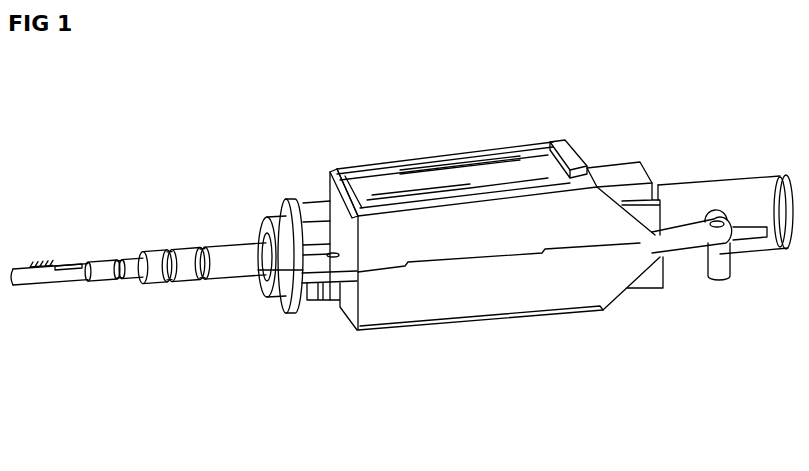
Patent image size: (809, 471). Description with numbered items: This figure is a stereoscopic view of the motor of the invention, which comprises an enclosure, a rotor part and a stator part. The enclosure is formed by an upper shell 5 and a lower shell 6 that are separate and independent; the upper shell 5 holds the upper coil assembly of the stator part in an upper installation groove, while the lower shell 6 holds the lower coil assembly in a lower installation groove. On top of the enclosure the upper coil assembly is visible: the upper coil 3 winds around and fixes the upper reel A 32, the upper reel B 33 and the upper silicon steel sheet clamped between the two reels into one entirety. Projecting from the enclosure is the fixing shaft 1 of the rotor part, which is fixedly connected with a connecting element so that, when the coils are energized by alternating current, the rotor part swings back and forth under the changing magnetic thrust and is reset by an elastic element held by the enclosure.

The fixing shaft 1 is at (232, 258).
The upper coil 3 is at (445, 183).
The upper reel A 32 is at (341, 160).
The upper reel B 33 is at (568, 162).
The upper shell 5 is at (570, 227).
The lower shell 6 is at (448, 298).